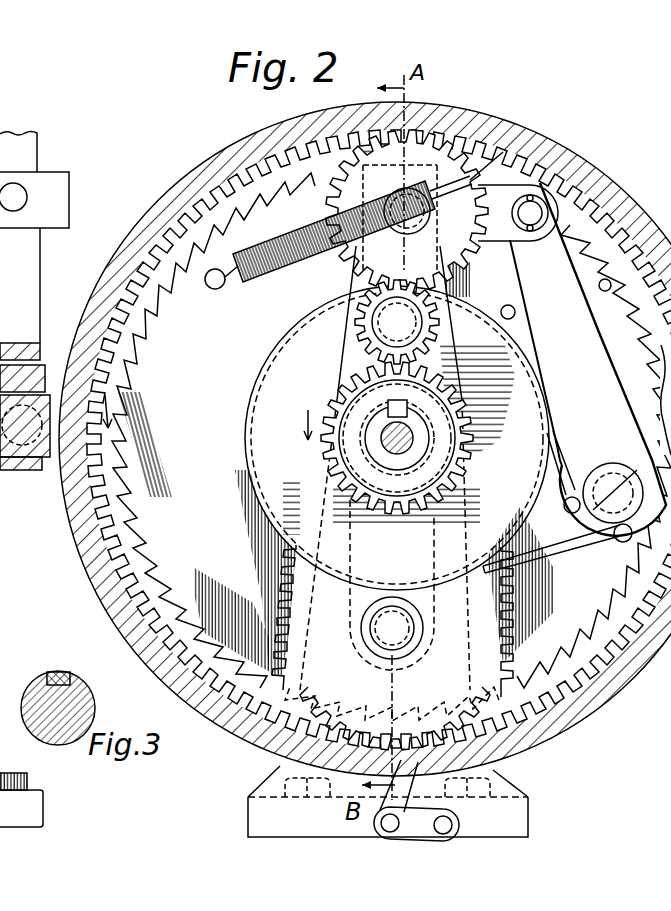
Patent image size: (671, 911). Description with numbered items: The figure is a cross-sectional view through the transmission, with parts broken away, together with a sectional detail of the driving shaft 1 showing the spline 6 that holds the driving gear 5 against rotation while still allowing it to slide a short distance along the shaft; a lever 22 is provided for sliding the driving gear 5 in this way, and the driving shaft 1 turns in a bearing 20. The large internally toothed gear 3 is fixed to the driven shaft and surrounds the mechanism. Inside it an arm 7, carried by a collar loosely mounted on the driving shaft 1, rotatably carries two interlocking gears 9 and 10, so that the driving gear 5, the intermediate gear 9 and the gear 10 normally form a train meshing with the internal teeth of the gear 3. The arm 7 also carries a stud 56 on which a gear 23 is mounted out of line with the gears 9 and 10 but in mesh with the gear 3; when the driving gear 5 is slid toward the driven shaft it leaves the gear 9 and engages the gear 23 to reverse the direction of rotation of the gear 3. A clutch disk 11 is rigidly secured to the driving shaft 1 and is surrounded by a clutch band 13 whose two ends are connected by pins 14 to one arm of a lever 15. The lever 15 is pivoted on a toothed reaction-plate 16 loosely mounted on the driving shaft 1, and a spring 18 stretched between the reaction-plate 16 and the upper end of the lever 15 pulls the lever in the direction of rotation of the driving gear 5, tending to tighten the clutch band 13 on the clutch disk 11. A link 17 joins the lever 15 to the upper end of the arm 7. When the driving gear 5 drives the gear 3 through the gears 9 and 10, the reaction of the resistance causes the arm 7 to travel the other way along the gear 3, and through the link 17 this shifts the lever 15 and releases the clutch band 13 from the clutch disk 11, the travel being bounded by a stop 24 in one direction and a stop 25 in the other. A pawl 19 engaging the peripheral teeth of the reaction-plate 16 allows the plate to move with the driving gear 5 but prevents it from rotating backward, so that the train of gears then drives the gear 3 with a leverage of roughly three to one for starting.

In FIG. 3, the driving shaft 1 is at (60, 706).
In FIG. 2, the internally toothed gear 3 is at (170, 230).
In FIG. 2, the driving gear 5 is at (330, 455).
In FIG. 3, the spline 6 is at (61, 672).
In FIG. 2, the arm 7 is at (357, 357).
In FIG. 2, the interlocking gear 9 is at (360, 333).
In FIG. 2, the interlocking gear 10 is at (395, 252).
In FIG. 2, the clutch disk 11 is at (280, 397).
In FIG. 2, the clutch band 13 is at (537, 565).
In FIG. 2, the pins 14 is at (614, 533).
In FIG. 2, the lever 15 is at (588, 359).
In FIG. 2, the reaction-plate 16 is at (387, 447).
In FIG. 2, the link 17 is at (510, 243).
In FIG. 2, the spring 18 is at (258, 250).
In FIG. 2, the pawl 19 is at (490, 722).
In FIG. 2, the bearing 20 is at (278, 768).
In FIG. 2, the lever 22 is at (34, 238).
In FIG. 2, the gear 23 is at (324, 667).
In FIG. 2, the stop 24 is at (611, 287).
In FIG. 2, the stop 25 is at (505, 305).
In FIG. 2, the stud 56 is at (397, 632).